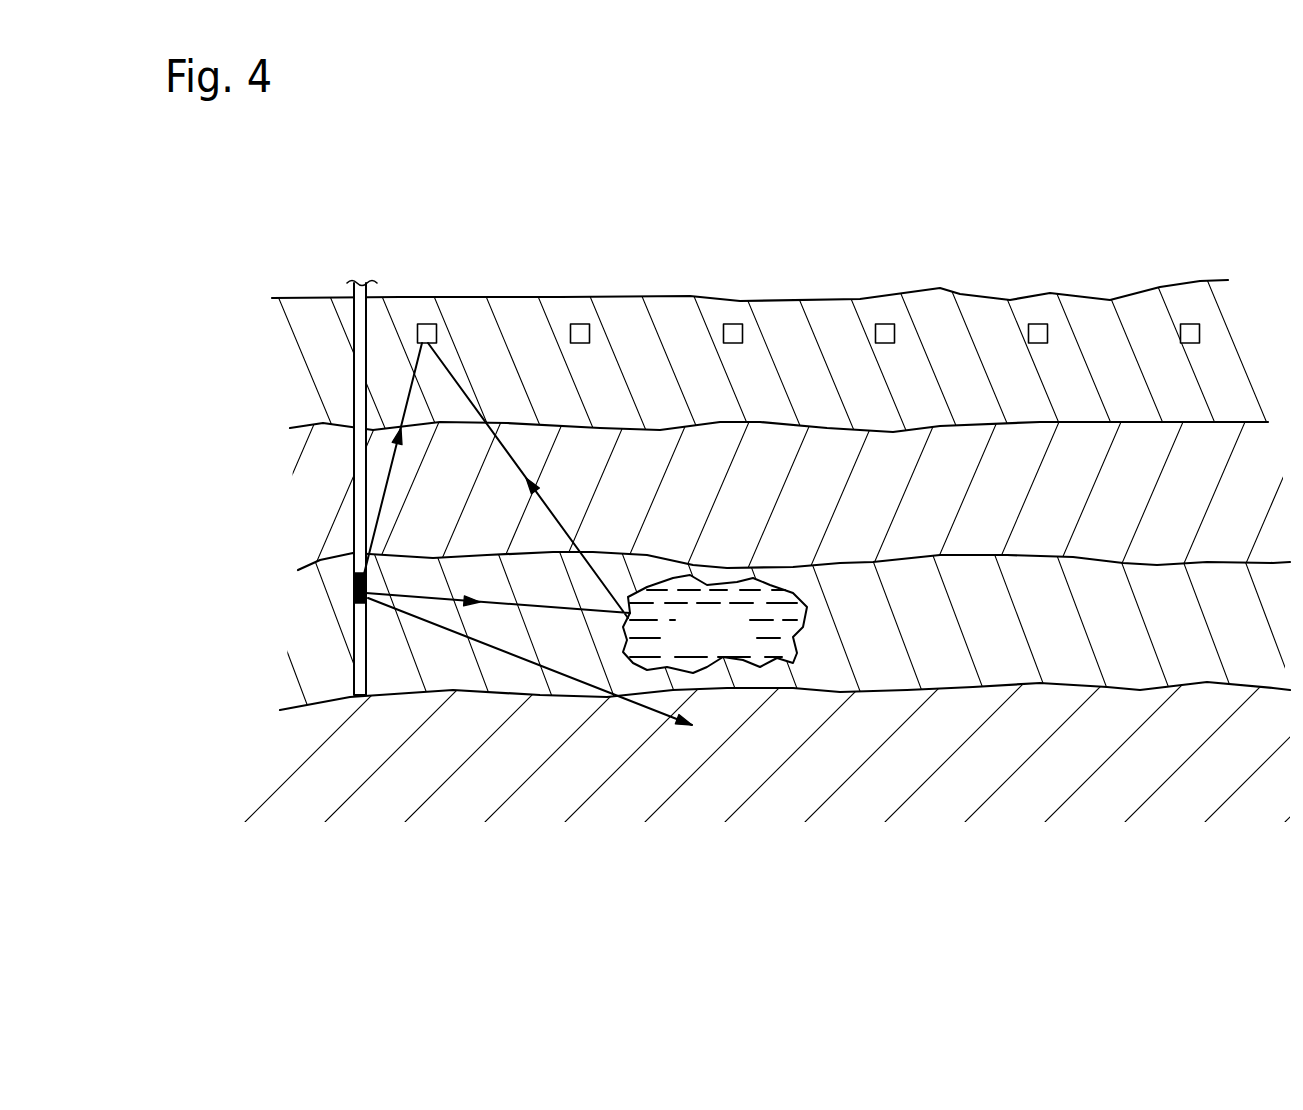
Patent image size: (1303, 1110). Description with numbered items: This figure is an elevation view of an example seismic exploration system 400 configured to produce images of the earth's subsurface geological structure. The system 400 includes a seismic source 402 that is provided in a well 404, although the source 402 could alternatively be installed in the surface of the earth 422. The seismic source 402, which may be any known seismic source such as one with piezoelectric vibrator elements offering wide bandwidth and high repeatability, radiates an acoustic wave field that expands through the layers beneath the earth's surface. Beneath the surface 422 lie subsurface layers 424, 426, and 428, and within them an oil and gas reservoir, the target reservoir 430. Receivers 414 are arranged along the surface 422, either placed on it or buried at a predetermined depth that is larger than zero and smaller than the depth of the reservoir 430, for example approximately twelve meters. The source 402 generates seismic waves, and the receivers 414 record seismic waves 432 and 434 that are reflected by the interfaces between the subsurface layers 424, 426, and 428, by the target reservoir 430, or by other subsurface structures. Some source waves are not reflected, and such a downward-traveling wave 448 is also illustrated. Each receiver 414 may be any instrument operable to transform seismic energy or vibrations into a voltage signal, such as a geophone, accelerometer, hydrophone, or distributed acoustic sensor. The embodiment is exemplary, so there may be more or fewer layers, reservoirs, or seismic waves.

The seismic exploration system 400 is at (1078, 147).
The seismic source 402 is at (353, 591).
The well 404 is at (354, 375).
The receivers 414 is at (1217, 270).
The surface of the earth 422 is at (962, 293).
The subsurface layer 424 is at (1258, 372).
The subsurface layer 426 is at (1256, 511).
The subsurface layer 428 is at (1256, 616).
The target reservoir 430 is at (733, 641).
The seismic wave 432 is at (385, 500).
The seismic wave 434 is at (540, 596).
The downgoing seismic wave 448 is at (628, 703).